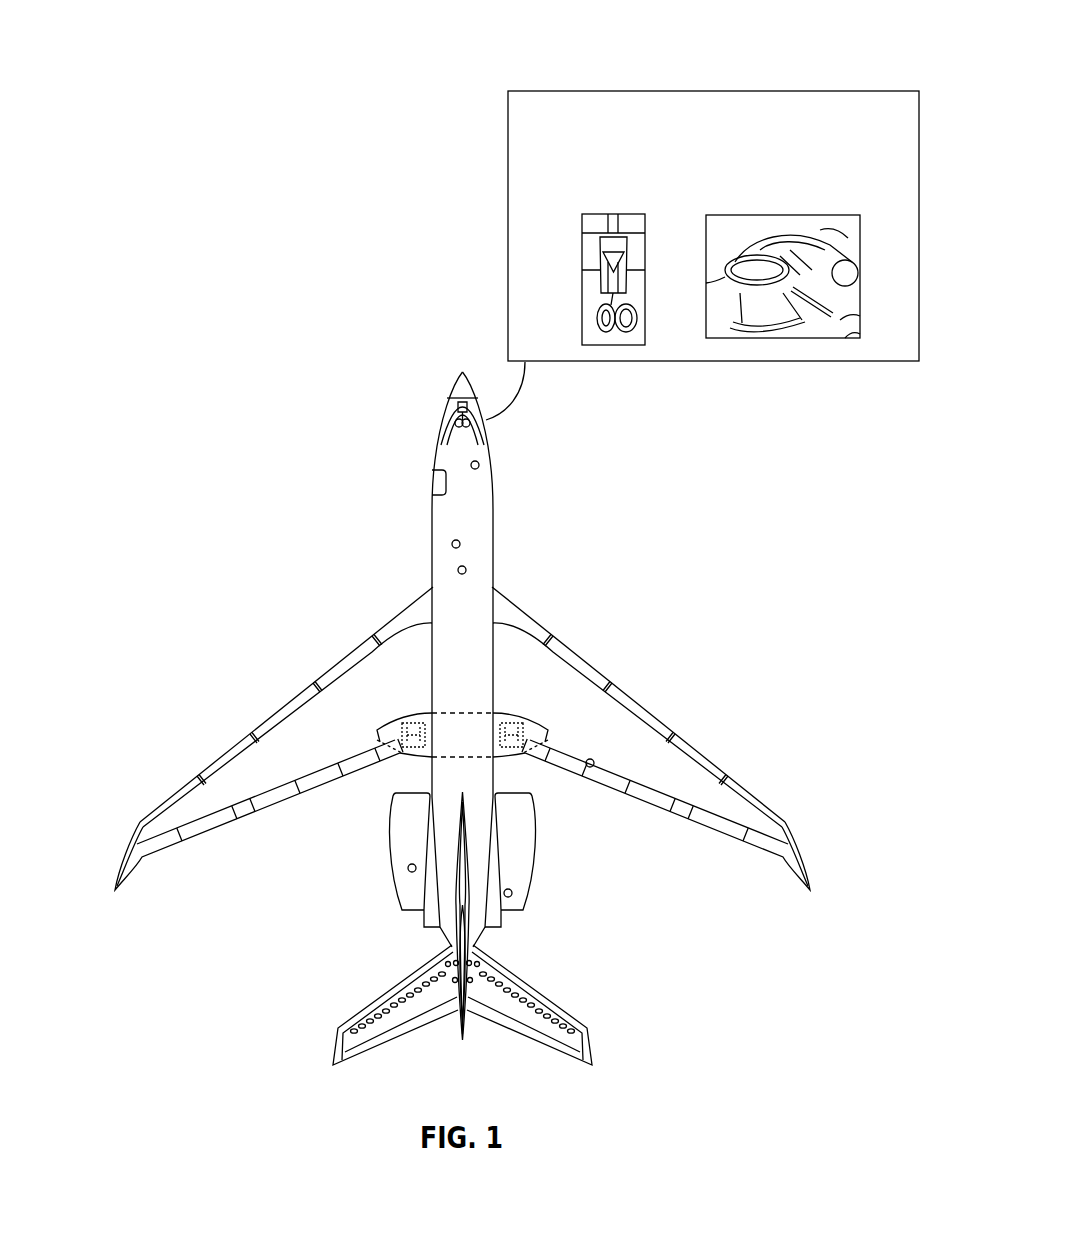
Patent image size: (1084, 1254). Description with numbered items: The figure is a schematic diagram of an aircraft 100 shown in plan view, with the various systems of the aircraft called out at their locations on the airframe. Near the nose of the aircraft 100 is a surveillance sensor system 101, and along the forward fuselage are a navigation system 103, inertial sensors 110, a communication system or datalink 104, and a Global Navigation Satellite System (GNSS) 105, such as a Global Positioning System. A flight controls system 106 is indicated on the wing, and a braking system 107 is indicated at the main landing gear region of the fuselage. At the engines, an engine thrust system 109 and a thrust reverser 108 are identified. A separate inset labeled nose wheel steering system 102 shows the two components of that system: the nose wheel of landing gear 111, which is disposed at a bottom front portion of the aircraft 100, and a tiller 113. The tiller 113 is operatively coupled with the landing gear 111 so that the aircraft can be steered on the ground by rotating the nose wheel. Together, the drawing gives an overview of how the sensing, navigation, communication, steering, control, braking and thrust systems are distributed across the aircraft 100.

The aircraft 100 is at (247, 62).
The surveillance sensor system 101 is at (447, 398).
The nose wheel steering system 102 is at (875, 91).
The navigation system 103 is at (432, 472).
The communication system or datalink 104 is at (460, 544).
The Global Navigation Satellite System (GNSS) 105 is at (458, 570).
The flight controls system 106 is at (594, 760).
The braking system 107 is at (412, 712).
The thrust reverser 108 is at (512, 893).
The engine thrust system 109 is at (408, 869).
The inertial sensors 110 is at (479, 463).
The nose wheel of landing gear 111 is at (633, 214).
The tiller 113 is at (810, 215).